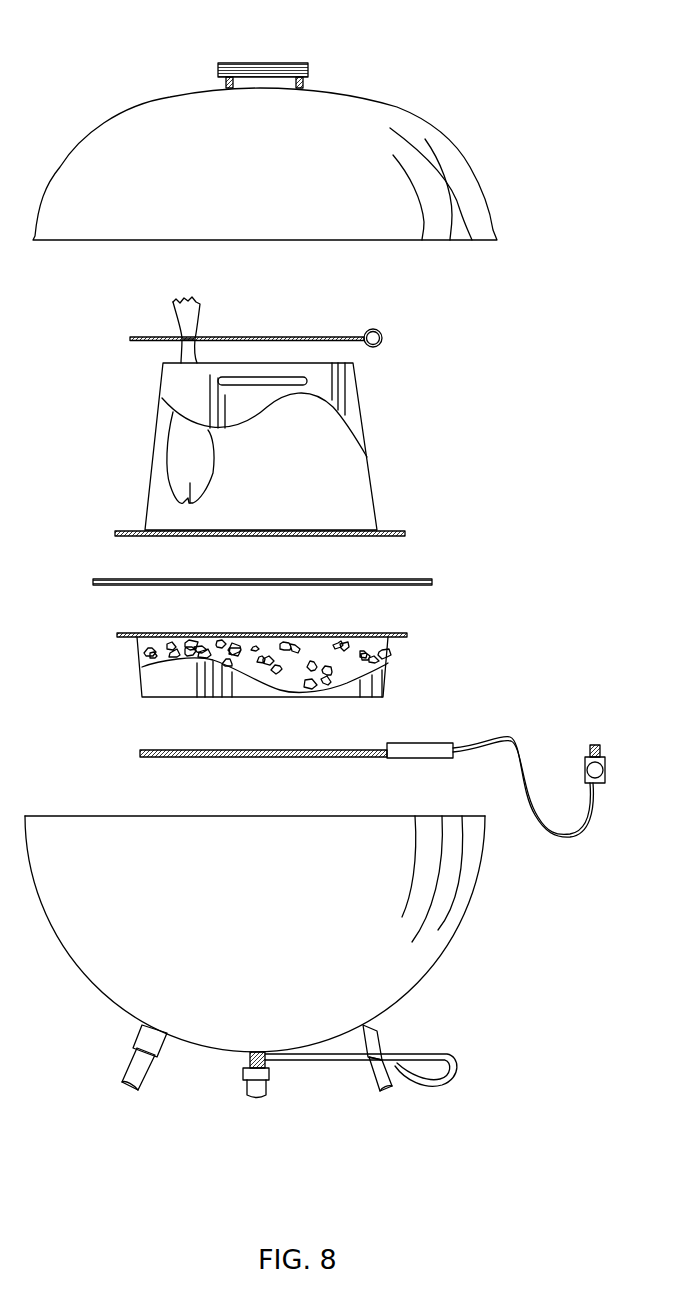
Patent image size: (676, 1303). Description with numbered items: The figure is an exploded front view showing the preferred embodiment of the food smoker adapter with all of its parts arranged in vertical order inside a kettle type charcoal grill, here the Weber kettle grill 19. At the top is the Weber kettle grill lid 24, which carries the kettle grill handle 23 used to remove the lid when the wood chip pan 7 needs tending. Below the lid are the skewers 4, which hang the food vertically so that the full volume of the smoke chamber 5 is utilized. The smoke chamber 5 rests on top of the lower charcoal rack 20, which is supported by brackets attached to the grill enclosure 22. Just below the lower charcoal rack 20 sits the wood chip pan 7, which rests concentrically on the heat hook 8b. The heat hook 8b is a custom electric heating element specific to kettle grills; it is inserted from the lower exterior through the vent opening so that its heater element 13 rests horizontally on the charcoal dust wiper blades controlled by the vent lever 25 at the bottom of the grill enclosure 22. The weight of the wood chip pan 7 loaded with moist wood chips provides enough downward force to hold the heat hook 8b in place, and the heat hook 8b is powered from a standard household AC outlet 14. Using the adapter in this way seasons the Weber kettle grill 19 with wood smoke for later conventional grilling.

The Weber kettle grill 19 is at (312, 123).
The Weber kettle grill lid 24 is at (312, 164).
The kettle grill handle 23 is at (316, 47).
The skewers 4 is at (305, 311).
The smoke chamber 5 is at (293, 416).
The lower charcoal rack 20 is at (301, 553).
The wood chip pan 7 is at (290, 640).
The heater element 13 is at (207, 724).
The heat hook 8b is at (458, 716).
The standard household AC outlet 14 is at (531, 757).
The grill enclosure 22 is at (297, 957).
The vent lever 25 is at (417, 1050).